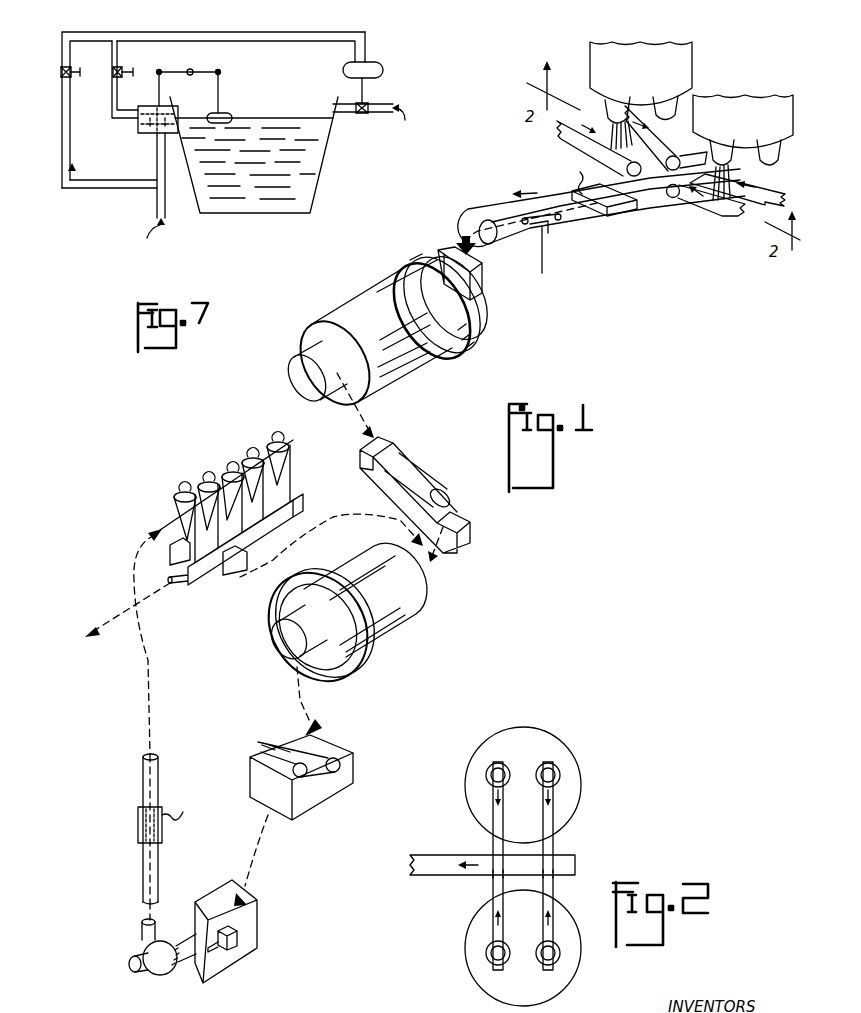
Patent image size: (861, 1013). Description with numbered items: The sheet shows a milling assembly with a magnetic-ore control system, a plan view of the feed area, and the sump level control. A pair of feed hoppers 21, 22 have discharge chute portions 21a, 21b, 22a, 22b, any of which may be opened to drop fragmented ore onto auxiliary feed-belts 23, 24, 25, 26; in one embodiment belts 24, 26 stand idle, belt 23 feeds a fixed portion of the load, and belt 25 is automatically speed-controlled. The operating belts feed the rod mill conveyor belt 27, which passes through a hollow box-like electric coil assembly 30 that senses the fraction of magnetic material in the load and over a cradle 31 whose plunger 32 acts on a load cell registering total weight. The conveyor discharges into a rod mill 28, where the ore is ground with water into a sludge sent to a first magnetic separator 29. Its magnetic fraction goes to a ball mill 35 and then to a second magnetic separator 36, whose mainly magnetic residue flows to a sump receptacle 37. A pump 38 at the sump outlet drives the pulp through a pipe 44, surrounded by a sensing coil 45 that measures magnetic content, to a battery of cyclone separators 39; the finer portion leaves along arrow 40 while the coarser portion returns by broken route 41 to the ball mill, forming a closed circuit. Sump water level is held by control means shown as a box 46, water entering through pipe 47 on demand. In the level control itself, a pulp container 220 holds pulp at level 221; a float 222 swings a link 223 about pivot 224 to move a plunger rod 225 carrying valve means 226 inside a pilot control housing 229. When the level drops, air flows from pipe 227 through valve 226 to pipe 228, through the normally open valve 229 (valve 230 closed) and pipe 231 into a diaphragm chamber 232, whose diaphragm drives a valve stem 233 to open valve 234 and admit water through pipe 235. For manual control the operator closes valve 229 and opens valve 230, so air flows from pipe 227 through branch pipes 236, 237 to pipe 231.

In FIG. 1, the feed hopper 21 is at (650, 42).
In FIG. 2, the feed hopper 21 is at (547, 728).
In FIG. 1, the discharge chute portion 21a is at (620, 107).
In FIG. 2, the discharge chute portion 21a is at (490, 768).
In FIG. 1, the discharge chute portion 21b is at (665, 103).
In FIG. 2, the discharge chute portion 21b is at (563, 770).
In FIG. 1, the feed hopper 22 is at (757, 102).
In FIG. 2, the feed hopper 22 is at (466, 925).
In FIG. 1, the discharge chute portion 22a is at (727, 146).
In FIG. 2, the discharge chute portion 22a is at (488, 958).
In FIG. 1, the discharge chute portion 22b is at (770, 149).
In FIG. 2, the discharge chute portion 22b is at (538, 961).
In FIG. 1, the auxiliary feed-belt 23 is at (585, 148).
In FIG. 2, the auxiliary feed-belt 23 is at (493, 845).
In FIG. 1, the auxiliary feed-belt 24 is at (673, 141).
In FIG. 2, the auxiliary feed-belt 24 is at (556, 845).
In FIG. 1, the auxiliary feed-belt 25 is at (707, 212).
In FIG. 2, the auxiliary feed-belt 25 is at (495, 883).
In FIG. 1, the auxiliary feed-belt 26 is at (773, 193).
In FIG. 2, the auxiliary feed-belt 26 is at (555, 884).
In FIG. 1, the rod mill conveyor belt 27 is at (478, 210).
In FIG. 2, the rod mill conveyor belt 27 is at (428, 856).
In FIG. 1, the rod mill 28 is at (373, 312).
In FIG. 1, the first magnetic separator 29 is at (418, 465).
In FIG. 1, the electric coil assembly 30 is at (621, 212).
In FIG. 1, the cradle 31 is at (532, 233).
In FIG. 1, the plunger 32 is at (544, 255).
In FIG. 1, the ball mill 35 is at (424, 618).
In FIG. 1, the second magnetic separator 36 is at (333, 797).
In FIG. 1, the sump receptacle 37 is at (250, 913).
In FIG. 1, the pump 38 is at (169, 976).
In FIG. 1, the cyclone separators 39 is at (214, 464).
In FIG. 1, the arrow 40 is at (85, 632).
In FIG. 1, the broken route 41 is at (333, 518).
In FIG. 1, the pipe 44 is at (160, 776).
In FIG. 1, the sensing coil 45 is at (138, 829).
In FIG. 1, the box 46 is at (240, 946).
In FIG. 1, the pipe 47 is at (224, 953).
In FIG. 7, the pulp container 220 is at (322, 170).
In FIG. 7, the pulp level 221 is at (290, 113).
In FIG. 7, the float 222 is at (231, 114).
In FIG. 7, the swingable link 223 is at (213, 70).
In FIG. 7, the pivot 224 is at (190, 69).
In FIG. 7, the plunger rod 225 is at (159, 90).
In FIG. 7, the valve means 226 is at (166, 115).
In FIG. 7, the pipe 227 is at (157, 155).
In FIG. 7, the pipe 228 is at (112, 103).
In FIG. 7, the pilot control housing / valve 229 is at (112, 70).
In FIG. 7, the valve 230 is at (60, 72).
In FIG. 7, the pipe 231 is at (340, 28).
In FIG. 7, the diaphragm chamber 232 is at (382, 64).
In FIG. 7, the valve stem or plunger 233 is at (364, 88).
In FIG. 7, the valve 234 is at (370, 104).
In FIG. 7, the pipe 235 is at (347, 116).
In FIG. 7, the branch pipe 236 is at (92, 189).
In FIG. 7, the branch pipe 237 is at (92, 32).